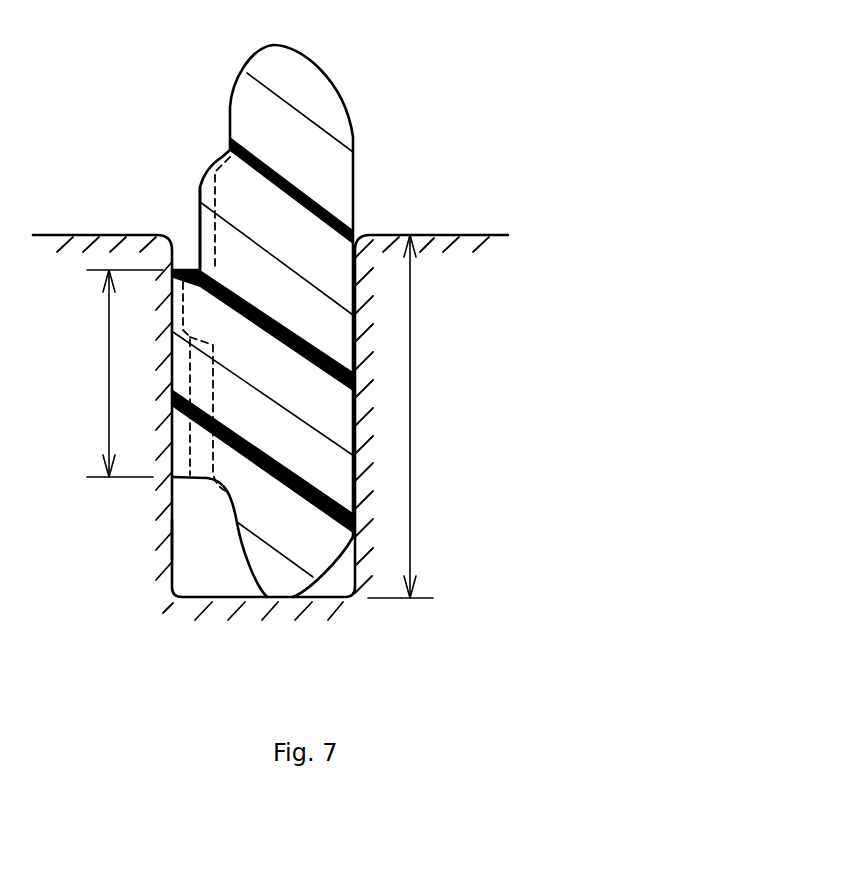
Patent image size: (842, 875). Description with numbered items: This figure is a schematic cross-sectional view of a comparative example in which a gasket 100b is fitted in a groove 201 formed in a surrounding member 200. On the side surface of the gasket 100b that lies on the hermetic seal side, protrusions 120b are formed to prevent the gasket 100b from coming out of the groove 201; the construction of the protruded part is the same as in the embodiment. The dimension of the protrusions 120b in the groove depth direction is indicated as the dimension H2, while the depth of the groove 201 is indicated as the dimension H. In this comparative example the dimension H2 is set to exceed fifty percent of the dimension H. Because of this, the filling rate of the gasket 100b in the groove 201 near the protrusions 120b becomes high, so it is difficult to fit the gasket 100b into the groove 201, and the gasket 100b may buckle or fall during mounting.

The gasket 100b is at (403, 125).
The protrusions 120b is at (183, 273).
The substrate with hole 200 is at (470, 240).
The groove 201 is at (168, 548).
The depth dimension of the groove H is at (406, 416).
The dimension in the groove depth direction of the protrusions H2 is at (112, 373).